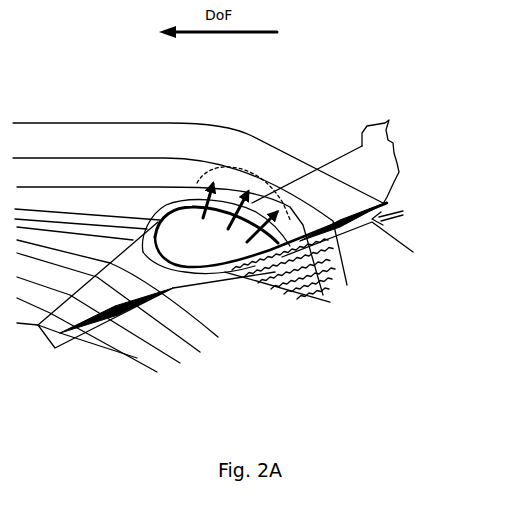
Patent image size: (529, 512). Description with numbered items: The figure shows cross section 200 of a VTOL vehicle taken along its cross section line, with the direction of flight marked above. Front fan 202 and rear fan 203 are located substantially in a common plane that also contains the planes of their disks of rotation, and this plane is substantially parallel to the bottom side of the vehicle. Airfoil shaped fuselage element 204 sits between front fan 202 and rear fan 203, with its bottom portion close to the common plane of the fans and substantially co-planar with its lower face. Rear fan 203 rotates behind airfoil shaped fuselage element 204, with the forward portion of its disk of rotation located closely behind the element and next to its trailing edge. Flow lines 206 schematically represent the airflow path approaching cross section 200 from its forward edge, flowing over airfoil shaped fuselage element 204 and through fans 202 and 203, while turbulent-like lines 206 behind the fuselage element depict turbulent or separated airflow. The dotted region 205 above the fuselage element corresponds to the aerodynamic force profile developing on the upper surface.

The cross section 200 is at (341, 377).
The front fan 202 is at (95, 328).
The rear fan 203 is at (363, 218).
The airfoil shaped fuselage element 204 is at (185, 228).
The boundary layer region 205 is at (264, 143).
The flow lines 206 is at (47, 245).